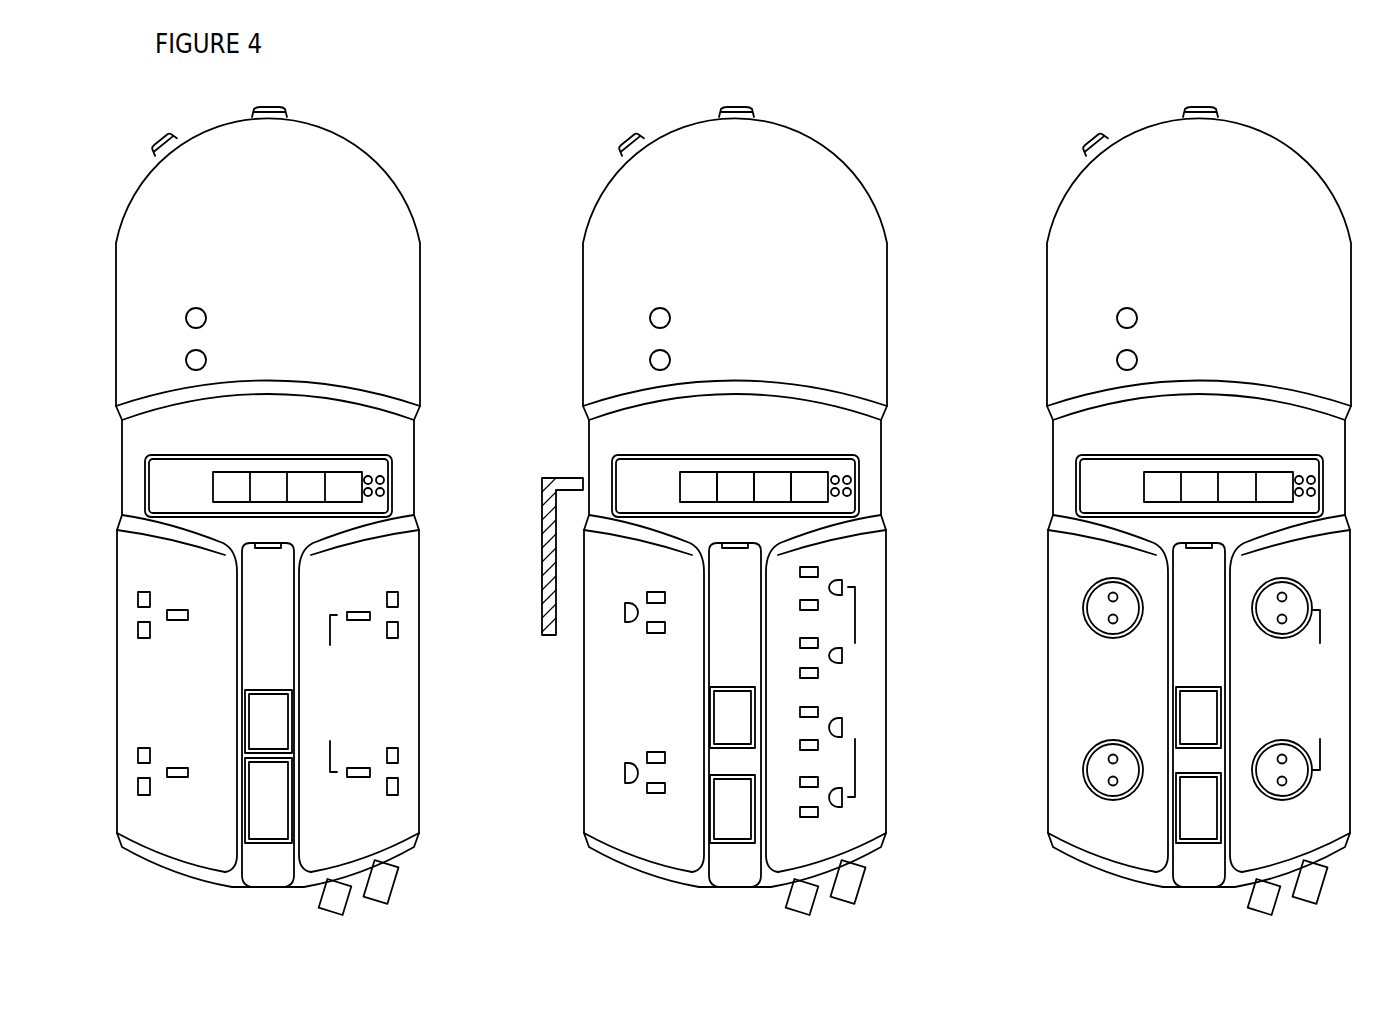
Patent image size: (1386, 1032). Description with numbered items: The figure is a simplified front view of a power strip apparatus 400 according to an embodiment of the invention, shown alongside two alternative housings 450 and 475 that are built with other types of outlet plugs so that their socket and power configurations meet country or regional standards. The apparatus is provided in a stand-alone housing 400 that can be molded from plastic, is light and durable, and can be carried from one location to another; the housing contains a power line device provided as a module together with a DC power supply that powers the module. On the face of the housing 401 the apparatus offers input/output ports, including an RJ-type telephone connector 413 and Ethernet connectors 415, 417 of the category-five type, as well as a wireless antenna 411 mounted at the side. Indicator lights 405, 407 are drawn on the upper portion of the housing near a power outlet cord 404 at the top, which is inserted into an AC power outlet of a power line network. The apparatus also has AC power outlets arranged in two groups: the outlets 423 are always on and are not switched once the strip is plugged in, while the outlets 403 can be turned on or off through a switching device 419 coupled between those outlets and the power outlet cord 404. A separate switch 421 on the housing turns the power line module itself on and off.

The housing 450 is at (401, 111).
The power strip apparatus 400 is at (734, 497).
The housing 401 is at (868, 255).
The power outlet cord 404 is at (733, 107).
The indicator light 405 is at (656, 308).
The indicator light 407 is at (670, 358).
The wireless antenna 411 is at (547, 637).
The RJ-11-type connector 413 is at (698, 479).
The Ethernet connector 415 is at (735, 479).
The Ethernet connector 417 is at (807, 479).
The AC outlet 403 is at (833, 579).
The switch 421 is at (740, 700).
The switching device 419 is at (733, 827).
The AC outlet 423 is at (633, 784).
The housing 475 is at (1332, 110).